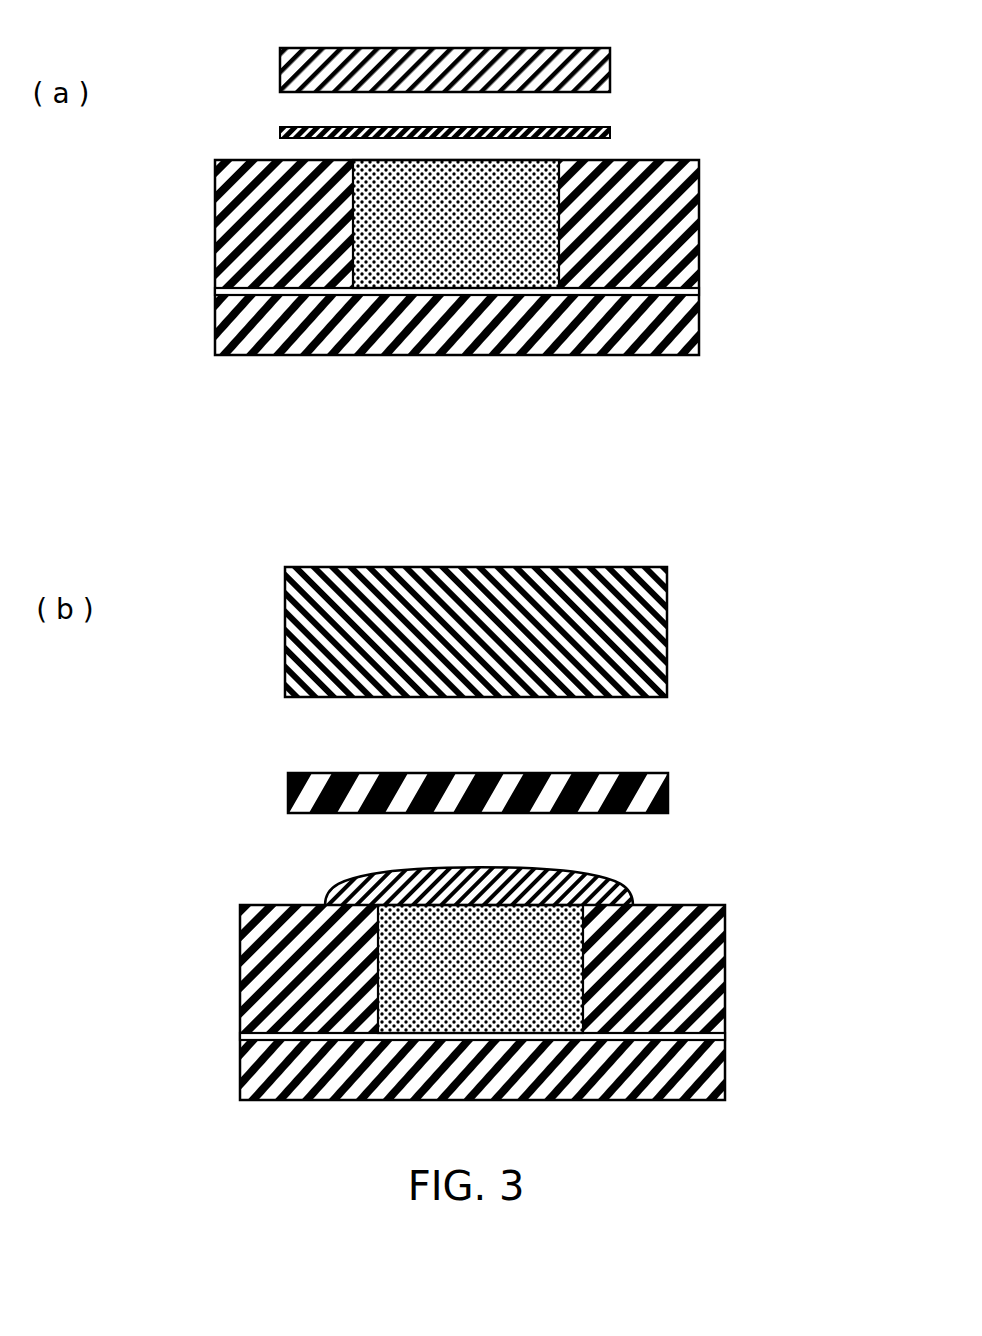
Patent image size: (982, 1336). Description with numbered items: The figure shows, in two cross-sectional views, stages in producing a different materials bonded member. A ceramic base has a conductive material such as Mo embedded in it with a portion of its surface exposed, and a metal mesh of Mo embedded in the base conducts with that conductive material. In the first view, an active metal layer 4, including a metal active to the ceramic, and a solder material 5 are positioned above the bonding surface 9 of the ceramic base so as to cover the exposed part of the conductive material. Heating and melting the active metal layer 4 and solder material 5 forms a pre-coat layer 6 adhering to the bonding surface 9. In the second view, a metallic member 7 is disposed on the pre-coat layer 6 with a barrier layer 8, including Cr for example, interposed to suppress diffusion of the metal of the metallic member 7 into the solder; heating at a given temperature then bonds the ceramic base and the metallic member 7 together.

The active metal layer 4 is at (610, 130).
The solder material 5 is at (610, 50).
The pre-coat layer 6 is at (615, 890).
The metallic member 7 is at (660, 585).
The barrier layer 8 is at (668, 786).
The bonding surface 9 is at (380, 207).